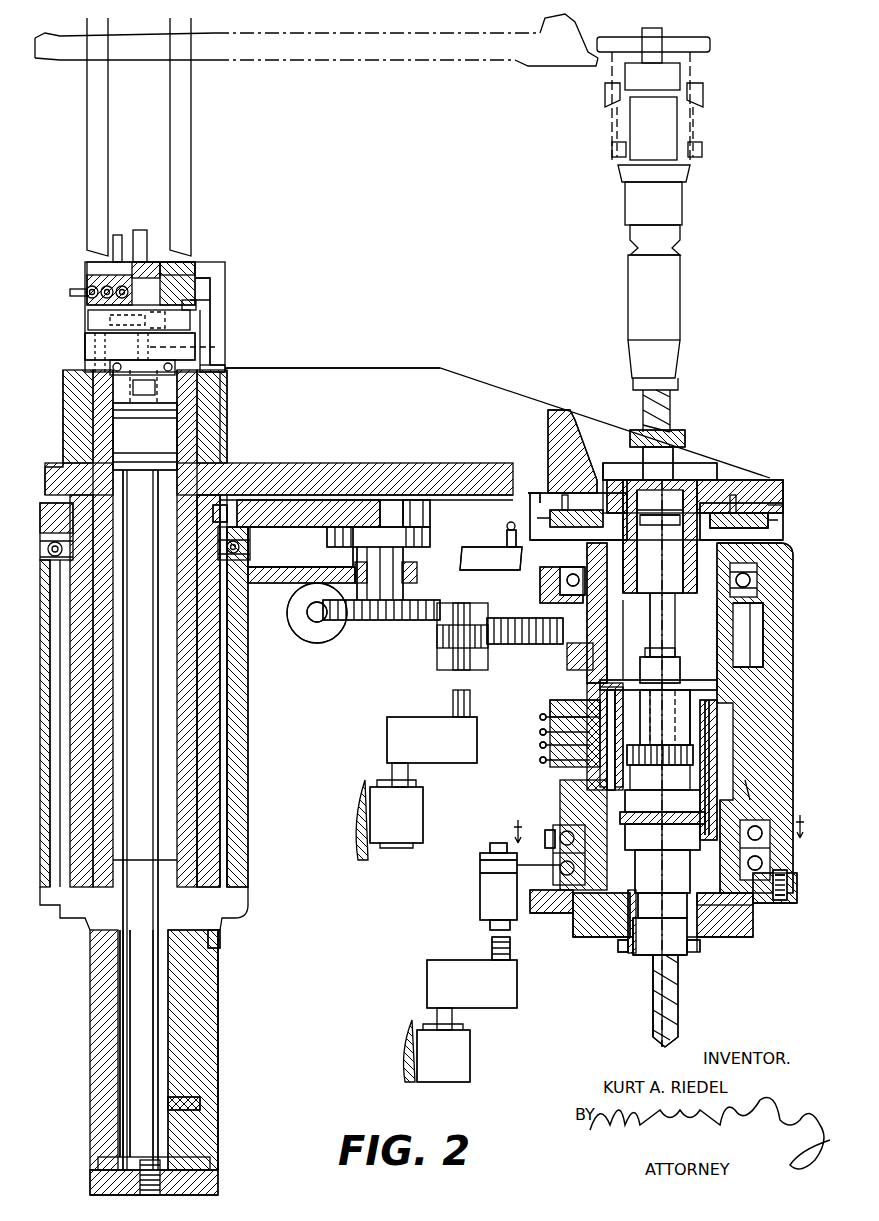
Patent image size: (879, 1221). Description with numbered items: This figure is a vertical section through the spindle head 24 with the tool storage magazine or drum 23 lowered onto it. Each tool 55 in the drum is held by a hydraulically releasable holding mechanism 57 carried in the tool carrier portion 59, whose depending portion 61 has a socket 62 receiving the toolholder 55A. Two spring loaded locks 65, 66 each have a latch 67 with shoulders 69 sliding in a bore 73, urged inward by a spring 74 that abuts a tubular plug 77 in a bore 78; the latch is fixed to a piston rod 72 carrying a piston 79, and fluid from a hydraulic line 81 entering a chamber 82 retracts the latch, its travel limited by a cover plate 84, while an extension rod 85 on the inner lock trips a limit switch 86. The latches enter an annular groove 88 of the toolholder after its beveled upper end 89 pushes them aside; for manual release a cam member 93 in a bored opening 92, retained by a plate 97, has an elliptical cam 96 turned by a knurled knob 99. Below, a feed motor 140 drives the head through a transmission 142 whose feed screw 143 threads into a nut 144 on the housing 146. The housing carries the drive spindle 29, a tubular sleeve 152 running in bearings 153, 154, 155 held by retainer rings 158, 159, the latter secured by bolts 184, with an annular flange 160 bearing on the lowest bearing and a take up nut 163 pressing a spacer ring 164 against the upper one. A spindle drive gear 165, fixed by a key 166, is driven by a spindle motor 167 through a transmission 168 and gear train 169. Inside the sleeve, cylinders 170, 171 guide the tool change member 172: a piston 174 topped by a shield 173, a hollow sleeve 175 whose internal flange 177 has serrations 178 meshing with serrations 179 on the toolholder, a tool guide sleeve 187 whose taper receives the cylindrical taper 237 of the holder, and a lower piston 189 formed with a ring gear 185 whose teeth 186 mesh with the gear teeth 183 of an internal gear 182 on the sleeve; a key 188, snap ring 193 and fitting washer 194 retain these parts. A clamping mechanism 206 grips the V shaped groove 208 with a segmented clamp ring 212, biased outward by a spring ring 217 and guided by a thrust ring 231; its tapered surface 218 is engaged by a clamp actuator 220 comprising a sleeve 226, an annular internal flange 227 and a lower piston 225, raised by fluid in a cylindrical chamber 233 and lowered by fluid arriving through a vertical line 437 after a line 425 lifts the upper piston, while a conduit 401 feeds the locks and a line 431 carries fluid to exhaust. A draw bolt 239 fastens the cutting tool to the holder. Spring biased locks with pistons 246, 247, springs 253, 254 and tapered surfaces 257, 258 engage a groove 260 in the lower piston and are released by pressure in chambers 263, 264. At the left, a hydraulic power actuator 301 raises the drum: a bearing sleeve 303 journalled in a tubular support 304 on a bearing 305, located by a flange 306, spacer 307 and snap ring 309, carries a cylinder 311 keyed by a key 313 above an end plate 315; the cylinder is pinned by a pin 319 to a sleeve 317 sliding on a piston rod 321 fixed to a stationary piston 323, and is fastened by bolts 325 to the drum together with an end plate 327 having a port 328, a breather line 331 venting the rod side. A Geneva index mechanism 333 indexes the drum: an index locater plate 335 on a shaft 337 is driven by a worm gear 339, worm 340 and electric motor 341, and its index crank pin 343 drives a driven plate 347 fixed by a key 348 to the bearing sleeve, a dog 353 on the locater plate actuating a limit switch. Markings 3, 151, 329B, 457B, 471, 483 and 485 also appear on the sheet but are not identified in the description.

The section line 3- 3 is at (657, 820).
The tool storage magazine 23 is at (305, 372).
The spindle head 24 is at (521, 790).
The drive spindle 29 is at (634, 972).
The tool 55 is at (678, 1017).
The toolholder 55A is at (700, 660).
The tool holding mechanism 57 is at (735, 475).
The tool carrier portion 59 is at (720, 478).
The depending portion 61 is at (635, 575).
The socket 62 is at (633, 575).
The spring loaded lock 65 is at (790, 475).
The inner lock 66 is at (527, 480).
The latch 67 is at (610, 478).
The shoulders 69 is at (690, 528).
The piston rod 72 is at (772, 522).
The bore 73 is at (690, 550).
The spring 74 is at (745, 495).
The tubular plug 77 is at (705, 585).
The bore 78 is at (786, 505).
The piston 79 is at (785, 540).
The hydraulic line 81 is at (205, 290).
The chamber 82 is at (790, 486).
The cover plate 84 is at (550, 518).
The extension rod 85 is at (507, 522).
The limit switch 86 is at (491, 559).
The annular groove 88 is at (640, 670).
The beveled upper end 89 is at (662, 657).
The bored opening 92 is at (672, 455).
The cam member 93 is at (618, 465).
The elliptical cam 96 is at (660, 536).
The plate 97 is at (700, 480).
The knurled knob 99 is at (640, 430).
The feed motor 140 is at (455, 1065).
The transmission 142 is at (460, 970).
The feed screw 143 is at (512, 945).
The nut 144 is at (480, 905).
The housing 146 is at (785, 690).
The housing outer wall 151 is at (790, 650).
The spindle drive sleeve 152 is at (730, 640).
The bearing 153 is at (755, 580).
The bearing 154 is at (763, 835).
The bearing 155 is at (763, 863).
The bearing retainer ring 158 is at (780, 560).
The bearing retainer ring 159 is at (520, 875).
The annular flange 160 is at (745, 898).
The spindle take up nut 163 is at (560, 572).
The spacer ring 164 is at (540, 590).
The spindle drive gear 165 is at (560, 645).
The key 166 is at (575, 612).
The spindle motor 167 is at (388, 800).
The transmission 168 is at (435, 728).
The gear train 169 is at (508, 645).
The cylinder 170 is at (730, 622).
The cylinder 171 is at (712, 750).
The tool change member 172 is at (617, 665).
The shield 173 is at (720, 700).
The piston 174 is at (697, 700).
The hollow sleeve 175 is at (555, 762).
The internal flange 177 is at (637, 775).
The serrations 178 is at (665, 717).
The serrations 179 is at (632, 755).
The internal gear 182 is at (740, 935).
The gear teeth 183 is at (710, 945).
The threaded bolts 184 is at (790, 900).
The ring gear 185 is at (632, 955).
The teeth 186 is at (622, 950).
The tool guide sleeve 187 is at (645, 962).
The key 188 is at (660, 936).
The piston 189 is at (590, 928).
The snap ring 193 is at (688, 952).
The fitting washer 194 is at (715, 942).
The clamping mechanism 206 is at (610, 806).
The V shaped groove 208 is at (662, 801).
The clamp ring 212 is at (545, 832).
The spring ring 217 is at (712, 795).
The tapered surface 218 is at (545, 860).
The clamp actuator 220 is at (760, 810).
The lower piston 225 is at (662, 871).
The sleeve 226 is at (662, 905).
The annular internal flange 227 is at (662, 838).
The thrust ring 231 is at (600, 815).
The cylindrical chamber 233 is at (750, 805).
The cylindrical taper 237 is at (653, 965).
The draw bolt 239 is at (655, 655).
The piston 246 is at (788, 888).
The piston 247 is at (490, 870).
The spring 253 is at (740, 917).
The spring 254 is at (565, 918).
The tapered surface 257 is at (792, 908).
The tapered surface 258 is at (565, 935).
The groove 260 is at (745, 940).
The chamber 263 is at (788, 876).
The chamber 264 is at (490, 852).
The hydraulic power actuator 301 is at (240, 341).
The bearing sleeve 303 is at (210, 863).
The tubular support 304 is at (240, 890).
The bearing 305 is at (250, 585).
The flange 306 is at (290, 500).
The spacer 307 is at (222, 940).
The snap ring 309 is at (218, 950).
The cylinder 311 is at (200, 1057).
The key 313 is at (95, 580).
The end plate 315 is at (212, 1182).
The sleeve 317 is at (180, 1042).
The pin 319 is at (200, 1100).
The piston rod 321 is at (150, 1083).
The stationary piston 323 is at (148, 437).
The bolts 325 is at (90, 343).
The end plate 327 is at (210, 322).
The port 328 is at (215, 347).
The pin 329B is at (113, 240).
The breather line 331 is at (125, 1108).
The Geneva index mechanism 333 is at (500, 530).
The index locater plate 335 is at (528, 510).
The shaft 337 is at (372, 558).
The worm gear 339 is at (385, 612).
The worm 340 is at (300, 630).
The electric motor 341 is at (317, 622).
The index crank pin 343 is at (418, 500).
The driven plate 347 is at (302, 500).
The key 348 is at (230, 505).
The dog 353 is at (325, 538).
The conduit 401 is at (540, 717).
The line 425 is at (552, 700).
The line 431 is at (540, 732).
The vertical line 437 is at (712, 720).
The pin 457B is at (152, 211).
The block 471 is at (190, 272).
The spring 483 is at (540, 746).
The plate 485 is at (560, 905).